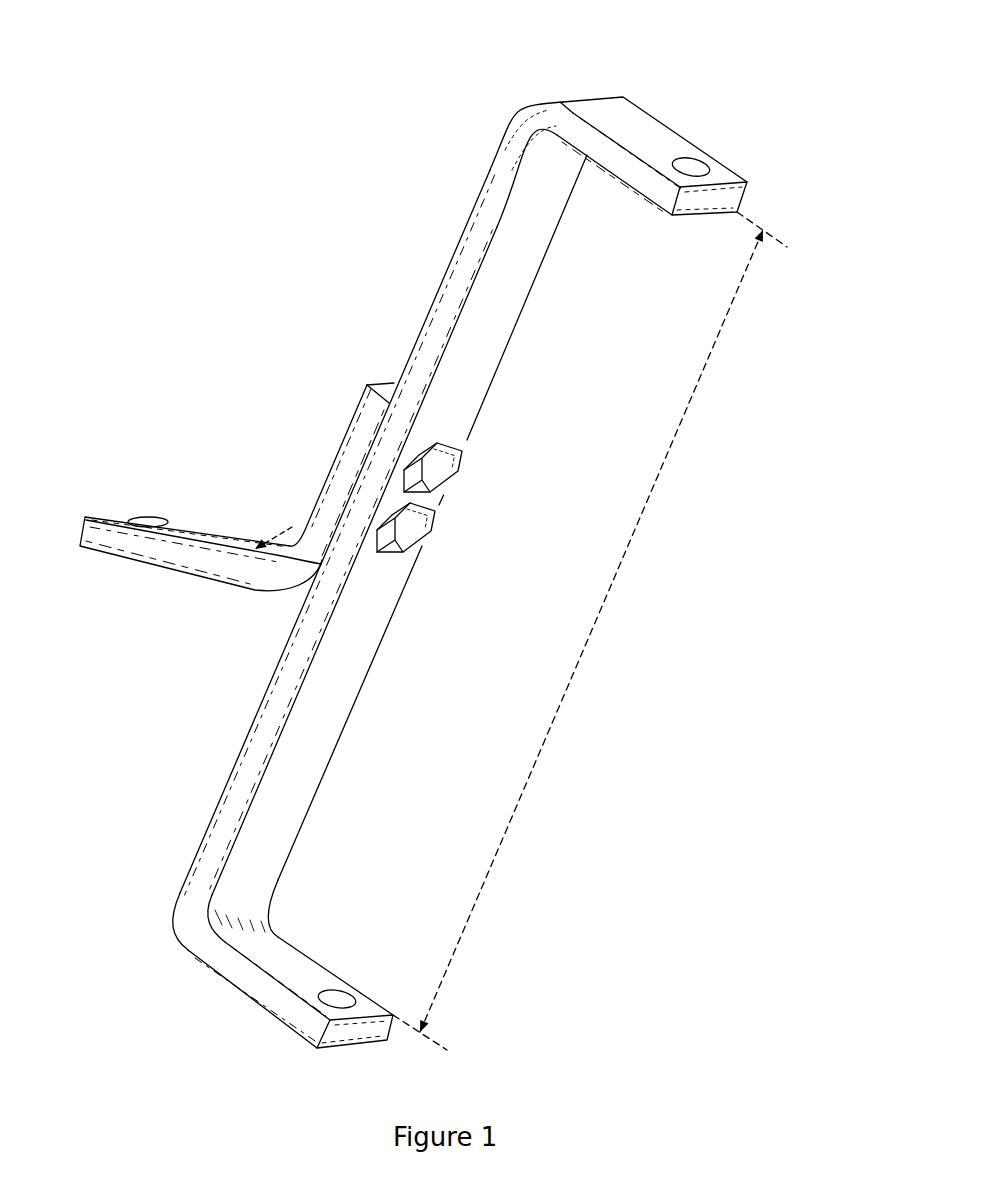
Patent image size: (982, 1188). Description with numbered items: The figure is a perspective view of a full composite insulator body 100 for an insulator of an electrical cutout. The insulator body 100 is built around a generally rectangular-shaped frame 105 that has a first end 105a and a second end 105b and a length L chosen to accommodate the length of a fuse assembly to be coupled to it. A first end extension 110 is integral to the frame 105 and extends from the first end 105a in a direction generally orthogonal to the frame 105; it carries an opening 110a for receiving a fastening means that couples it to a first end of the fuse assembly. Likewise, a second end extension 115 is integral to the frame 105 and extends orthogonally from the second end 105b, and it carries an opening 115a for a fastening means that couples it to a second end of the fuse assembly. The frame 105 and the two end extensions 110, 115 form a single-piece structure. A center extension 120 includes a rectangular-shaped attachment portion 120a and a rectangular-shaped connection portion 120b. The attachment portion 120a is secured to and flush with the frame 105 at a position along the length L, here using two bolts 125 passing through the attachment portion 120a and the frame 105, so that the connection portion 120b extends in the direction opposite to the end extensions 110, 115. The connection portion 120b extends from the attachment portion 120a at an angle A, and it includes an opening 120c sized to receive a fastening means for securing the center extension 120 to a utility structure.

The insulator body 100 is at (224, 60).
The frame 105 is at (362, 700).
The first end 105a is at (580, 98).
The second end 105b is at (176, 932).
The first end extension 110 is at (653, 136).
The opening 110a is at (691, 167).
The second end extension 115 is at (295, 966).
The opening 115a is at (338, 997).
The center extension 120 is at (205, 530).
The attachment portion 120a is at (362, 428).
The connection portion 120b is at (180, 553).
The opening 120c is at (147, 517).
The bolts 125 is at (439, 470).
The length L is at (597, 633).
The angle A is at (299, 525).